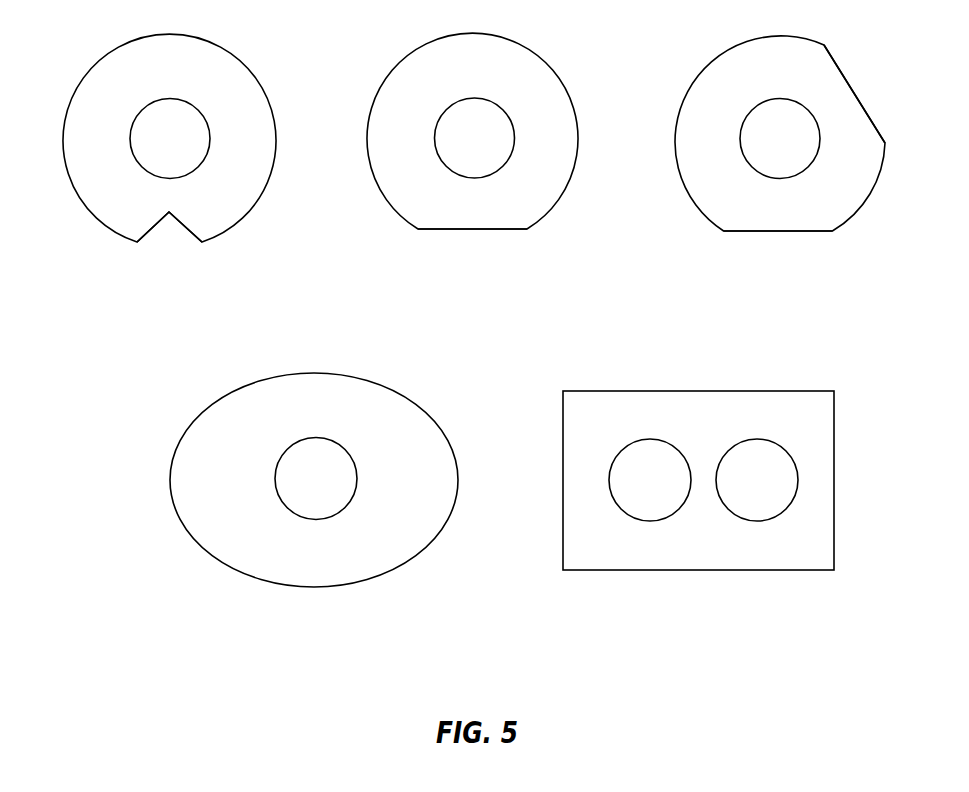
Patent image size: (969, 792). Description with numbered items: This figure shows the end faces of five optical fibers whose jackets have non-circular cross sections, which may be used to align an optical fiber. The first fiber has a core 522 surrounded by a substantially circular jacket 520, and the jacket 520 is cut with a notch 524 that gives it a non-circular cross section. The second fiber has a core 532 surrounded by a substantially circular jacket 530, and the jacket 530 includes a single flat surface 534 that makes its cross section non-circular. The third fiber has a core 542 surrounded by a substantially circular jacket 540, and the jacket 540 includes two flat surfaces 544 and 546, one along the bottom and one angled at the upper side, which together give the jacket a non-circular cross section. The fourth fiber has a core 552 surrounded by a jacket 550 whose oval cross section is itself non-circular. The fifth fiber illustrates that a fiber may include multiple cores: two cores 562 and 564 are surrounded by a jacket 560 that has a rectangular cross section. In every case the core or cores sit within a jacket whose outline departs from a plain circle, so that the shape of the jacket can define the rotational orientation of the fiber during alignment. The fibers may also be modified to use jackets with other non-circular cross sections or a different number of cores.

The jacket 520 is at (86, 72).
The core 522 is at (130, 150).
The notch 524 is at (171, 231).
The jacket 530 is at (392, 72).
The core 532 is at (435, 152).
The flat surface 534 is at (476, 236).
The jacket 540 is at (702, 72).
The core 542 is at (743, 150).
The flat surface 544 is at (782, 237).
The flat surface 546 is at (857, 82).
The jacket 550 is at (238, 392).
The core 552 is at (278, 468).
The jacket 560 is at (577, 391).
The core 562 is at (616, 468).
The core 564 is at (723, 468).